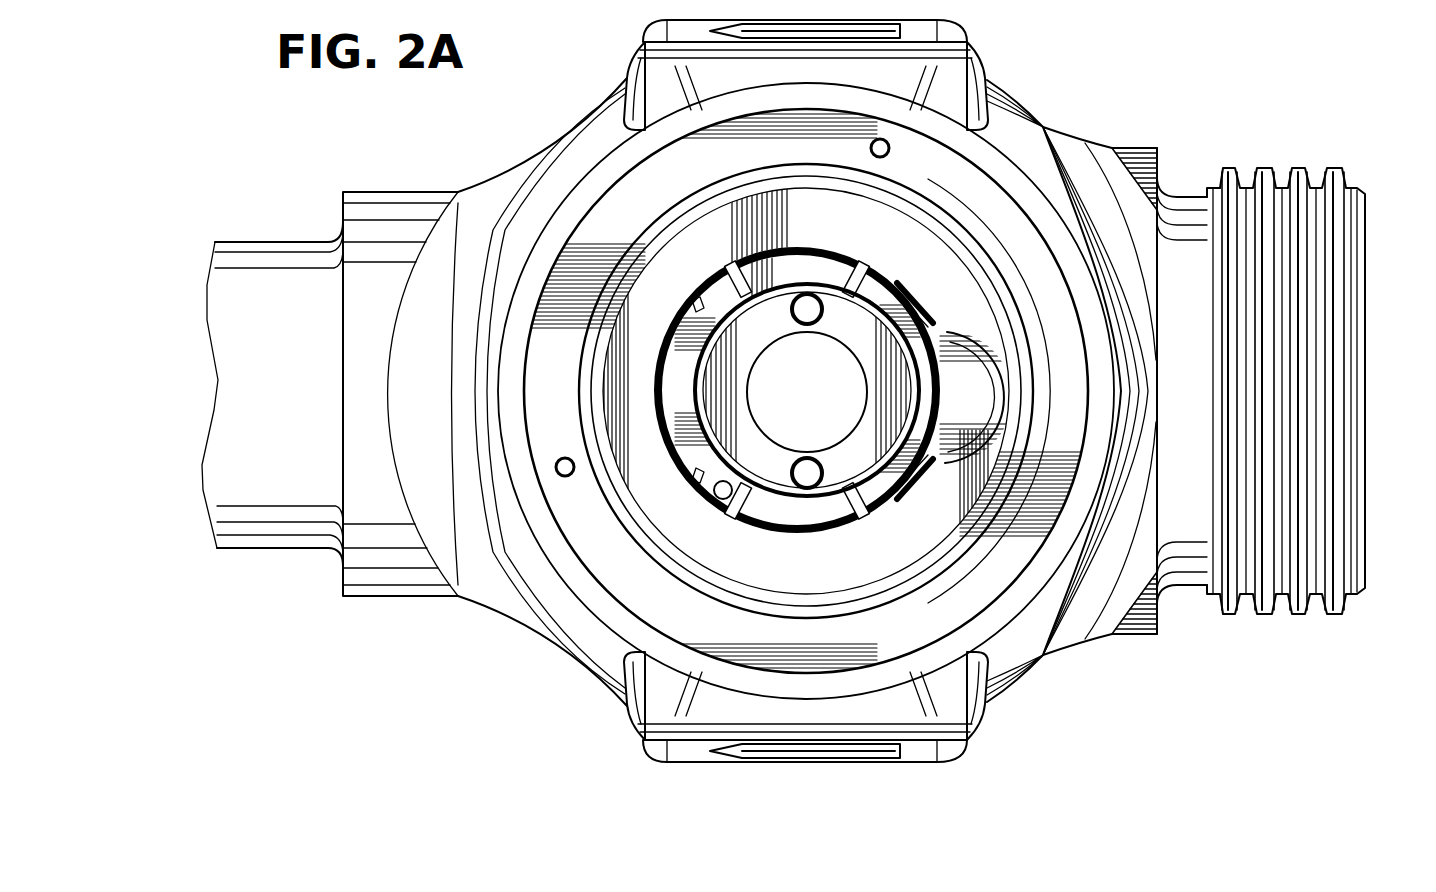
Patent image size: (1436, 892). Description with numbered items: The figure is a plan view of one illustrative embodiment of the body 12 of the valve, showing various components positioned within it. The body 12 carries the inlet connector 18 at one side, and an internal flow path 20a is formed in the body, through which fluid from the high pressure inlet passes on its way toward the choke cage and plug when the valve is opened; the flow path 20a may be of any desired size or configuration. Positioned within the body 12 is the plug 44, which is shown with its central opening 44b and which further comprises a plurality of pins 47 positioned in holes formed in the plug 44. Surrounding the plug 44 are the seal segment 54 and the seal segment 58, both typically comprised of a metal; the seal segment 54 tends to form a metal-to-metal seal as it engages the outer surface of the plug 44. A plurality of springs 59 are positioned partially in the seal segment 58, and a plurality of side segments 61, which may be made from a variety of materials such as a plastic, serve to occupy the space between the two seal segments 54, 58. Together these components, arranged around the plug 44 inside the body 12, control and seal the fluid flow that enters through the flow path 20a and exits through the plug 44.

The body 12 is at (573, 673).
The inlet connector 18 is at (1332, 168).
The flow path 20a is at (957, 332).
The plug 44 is at (717, 298).
The central bore 44b is at (767, 350).
The pins 47 is at (807, 300).
The seal segment 54 is at (682, 417).
The seal segment 58 is at (937, 403).
The springs 59 is at (925, 280).
The side segments 61 is at (840, 247).